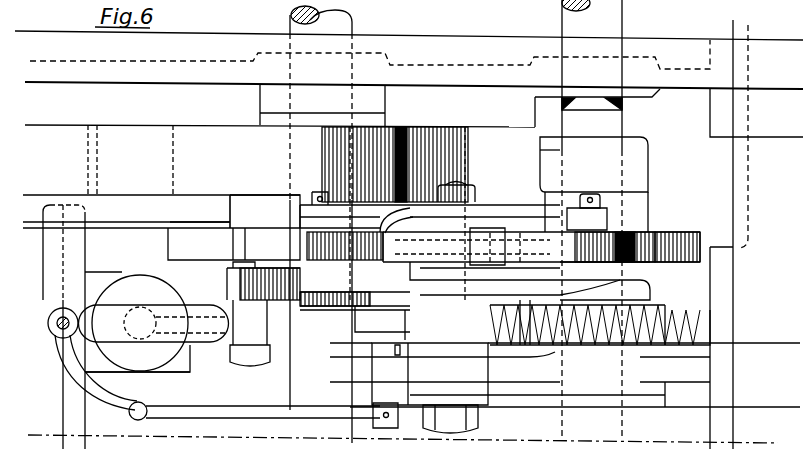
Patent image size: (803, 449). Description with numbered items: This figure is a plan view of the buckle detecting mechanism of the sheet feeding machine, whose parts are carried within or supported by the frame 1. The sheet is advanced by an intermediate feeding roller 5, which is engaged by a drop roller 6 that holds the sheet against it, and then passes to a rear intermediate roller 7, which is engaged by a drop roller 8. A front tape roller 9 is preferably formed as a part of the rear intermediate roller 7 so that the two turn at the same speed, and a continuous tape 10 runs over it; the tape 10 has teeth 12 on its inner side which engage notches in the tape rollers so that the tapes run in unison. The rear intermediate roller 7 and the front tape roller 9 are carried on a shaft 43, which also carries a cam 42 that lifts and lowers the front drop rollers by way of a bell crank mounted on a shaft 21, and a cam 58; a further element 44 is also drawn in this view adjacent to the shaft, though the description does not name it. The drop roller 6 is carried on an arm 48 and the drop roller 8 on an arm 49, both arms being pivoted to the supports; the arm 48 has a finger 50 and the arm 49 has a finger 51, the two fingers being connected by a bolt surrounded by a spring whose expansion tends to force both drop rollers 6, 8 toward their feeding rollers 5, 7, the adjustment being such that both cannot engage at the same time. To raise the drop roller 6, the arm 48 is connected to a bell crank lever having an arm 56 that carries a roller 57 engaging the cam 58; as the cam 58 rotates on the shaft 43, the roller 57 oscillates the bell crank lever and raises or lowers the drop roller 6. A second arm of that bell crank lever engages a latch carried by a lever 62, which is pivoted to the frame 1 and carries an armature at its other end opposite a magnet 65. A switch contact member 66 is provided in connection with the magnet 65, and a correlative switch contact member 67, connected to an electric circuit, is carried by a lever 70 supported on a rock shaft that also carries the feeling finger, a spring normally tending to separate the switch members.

The frame 1 is at (462, 50).
The intermediate feeding roller 5 is at (680, 224).
The drop roller 6 is at (645, 231).
The rear intermediate roller 7 is at (234, 244).
The drop roller 8 is at (265, 211).
The front tape roller 9 is at (209, 193).
The tape 10 is at (140, 195).
The teeth 12 is at (98, 176).
The shaft 21 is at (660, 136).
The cam 42 is at (445, 433).
The shaft 43 is at (540, 218).
The gear 44 is at (478, 200).
The arm 48 is at (488, 222).
The arm 49 is at (515, 278).
The finger 50 is at (535, 150).
The finger 51 is at (440, 252).
The arm 56 is at (352, 306).
The roller 57 is at (230, 278).
The cam 58 is at (320, 315).
The lever 62 is at (227, 340).
The magnet 65 is at (160, 362).
The switch contact member 66 is at (154, 323).
The switch contact member 67 is at (55, 330).
The lever 70 is at (238, 412).